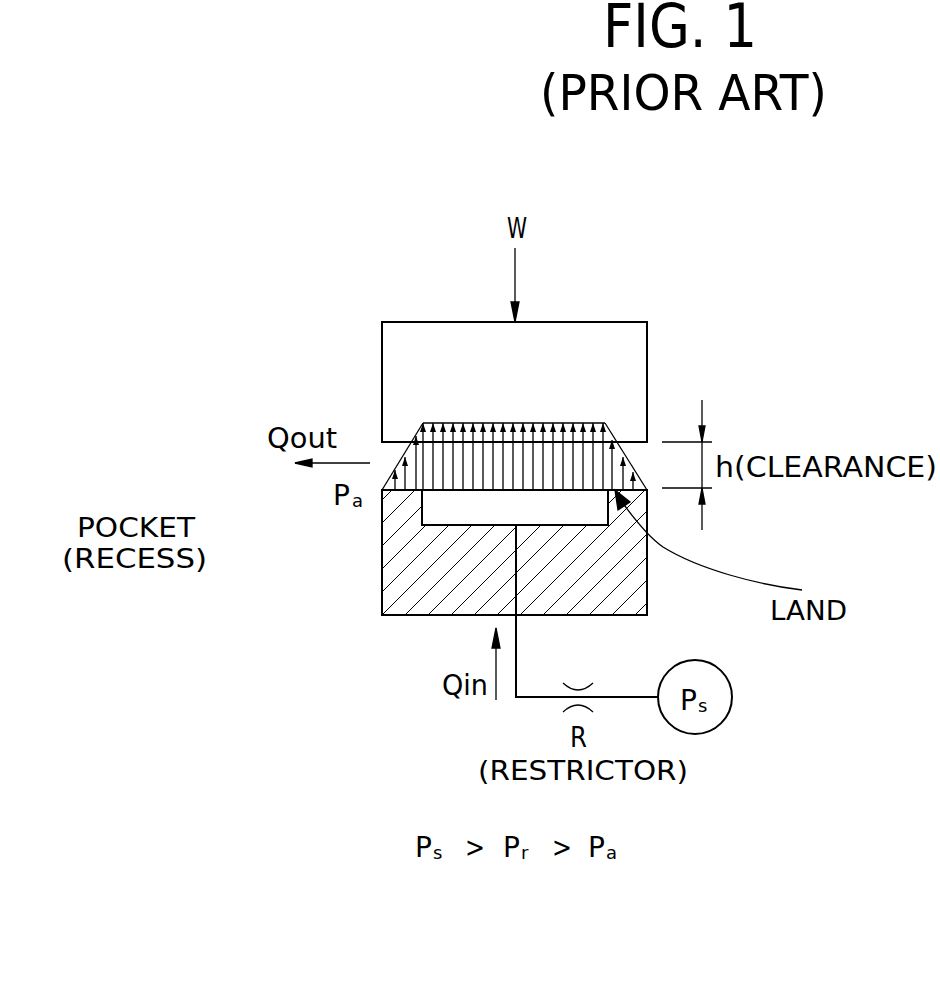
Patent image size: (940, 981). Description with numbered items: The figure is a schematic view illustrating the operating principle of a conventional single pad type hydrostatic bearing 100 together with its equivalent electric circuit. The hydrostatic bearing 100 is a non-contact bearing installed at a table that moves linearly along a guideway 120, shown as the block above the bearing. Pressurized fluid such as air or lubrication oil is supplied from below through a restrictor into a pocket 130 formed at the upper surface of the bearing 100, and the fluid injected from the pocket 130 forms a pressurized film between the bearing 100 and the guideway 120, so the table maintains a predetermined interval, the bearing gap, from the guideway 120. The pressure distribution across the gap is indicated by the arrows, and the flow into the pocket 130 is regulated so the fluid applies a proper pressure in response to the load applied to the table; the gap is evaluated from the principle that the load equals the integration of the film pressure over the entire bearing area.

The hydrostatic bearing 100 is at (370, 567).
The guideway 120 is at (432, 342).
The pocket 130 is at (450, 510).